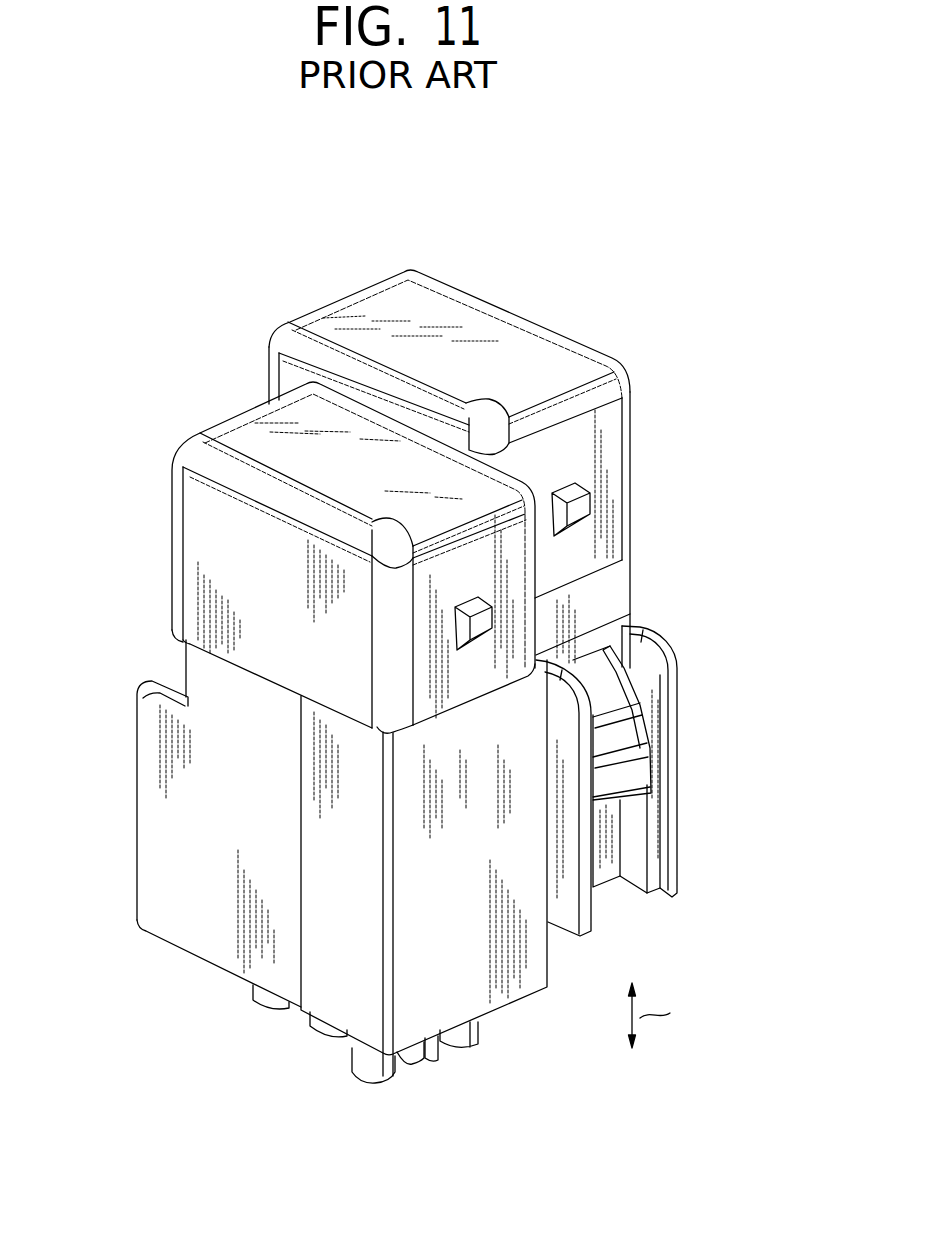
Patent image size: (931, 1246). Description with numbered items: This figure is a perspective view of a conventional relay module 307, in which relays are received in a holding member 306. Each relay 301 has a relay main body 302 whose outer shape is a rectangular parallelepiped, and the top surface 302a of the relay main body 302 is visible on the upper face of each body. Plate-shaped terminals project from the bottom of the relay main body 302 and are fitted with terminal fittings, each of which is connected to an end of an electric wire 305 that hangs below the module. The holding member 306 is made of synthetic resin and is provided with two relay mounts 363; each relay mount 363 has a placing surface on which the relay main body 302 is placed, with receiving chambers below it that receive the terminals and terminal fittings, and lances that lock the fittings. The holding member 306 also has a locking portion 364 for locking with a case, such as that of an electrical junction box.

The relay 301 is at (513, 463).
The relay main body 302 is at (416, 420).
The top surface 302a is at (397, 306).
The electric wire 305 is at (384, 1083).
The holding member 306 is at (246, 890).
The relay module 307 is at (767, 225).
The relay mount 363 is at (538, 696).
The locking portion 364 is at (627, 740).